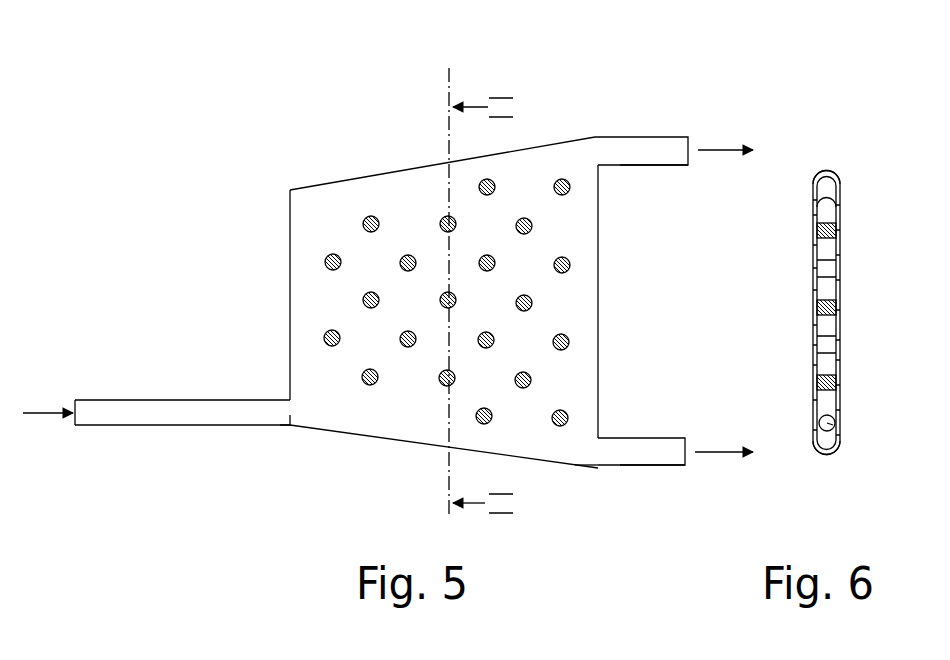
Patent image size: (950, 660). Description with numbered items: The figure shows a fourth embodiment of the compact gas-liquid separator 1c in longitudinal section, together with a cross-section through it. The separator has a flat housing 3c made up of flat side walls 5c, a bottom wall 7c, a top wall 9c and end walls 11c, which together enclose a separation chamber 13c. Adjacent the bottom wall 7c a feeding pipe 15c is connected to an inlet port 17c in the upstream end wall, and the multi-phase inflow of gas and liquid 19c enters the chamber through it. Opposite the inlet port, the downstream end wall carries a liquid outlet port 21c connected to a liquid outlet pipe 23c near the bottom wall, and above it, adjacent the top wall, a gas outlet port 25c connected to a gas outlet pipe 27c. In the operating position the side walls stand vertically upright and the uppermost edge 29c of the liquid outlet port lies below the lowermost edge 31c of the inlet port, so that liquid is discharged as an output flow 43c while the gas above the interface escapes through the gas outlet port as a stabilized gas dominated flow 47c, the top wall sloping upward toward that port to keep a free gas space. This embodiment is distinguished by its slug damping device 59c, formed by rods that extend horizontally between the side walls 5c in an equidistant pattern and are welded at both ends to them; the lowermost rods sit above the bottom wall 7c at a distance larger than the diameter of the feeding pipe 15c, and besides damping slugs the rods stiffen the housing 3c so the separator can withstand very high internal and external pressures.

In FIG. 5, the gas-liquid separator 1c is at (310, 123).
In FIG. 5, the housing 3c is at (385, 168).
In FIG. 6, the side walls 5c is at (813, 286).
In FIG. 5, the bottom wall 7c is at (420, 445).
In FIG. 6, the bottom wall 7c is at (826, 456).
In FIG. 5, the top wall 9c is at (508, 152).
In FIG. 6, the top wall 9c is at (827, 170).
In FIG. 5, the end walls 11c is at (289, 281).
In FIG. 5, the separation chamber 13c is at (300, 324).
In FIG. 5, the feeding pipe 15c is at (127, 427).
In FIG. 5, the inlet port 17c is at (278, 413).
In FIG. 6, the inlet port 17c is at (835, 422).
In FIG. 5, the inlet flow 19c is at (47, 408).
In FIG. 5, the liquid outlet port 21c is at (600, 452).
In FIG. 5, the liquid outlet pipe 23c is at (650, 436).
In FIG. 5, the gas outlet port 25c is at (597, 150).
In FIG. 5, the gas outlet pipe 27c is at (640, 167).
In FIG. 5, the uppermost edge of liquid outlet port 29c is at (587, 457).
In FIG. 5, the lowermost edge of inlet port 31c is at (288, 422).
In FIG. 5, the output flow 43c is at (715, 452).
In FIG. 5, the gas dominated flow 47c is at (718, 150).
In FIG. 5, the slug damping device 59c is at (416, 262).
In FIG. 6, the slug damping device 59c is at (813, 230).